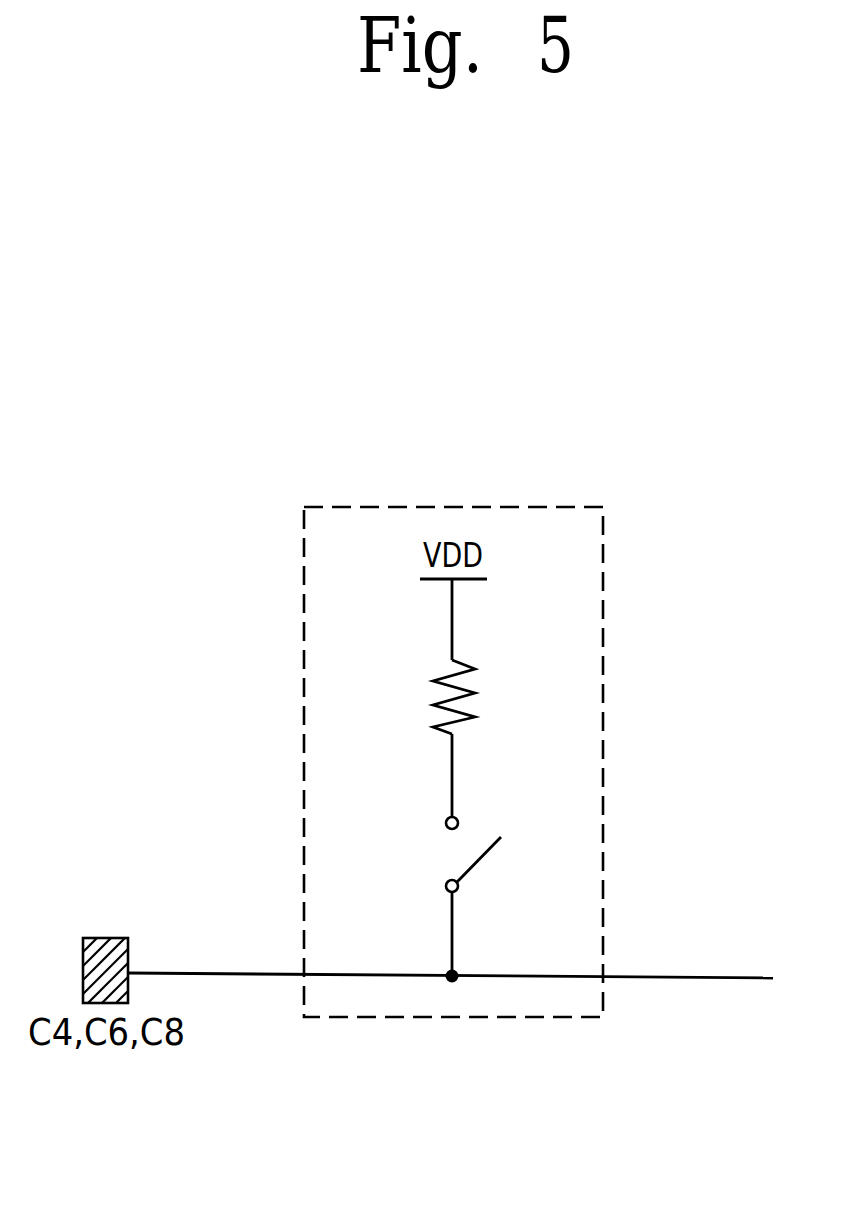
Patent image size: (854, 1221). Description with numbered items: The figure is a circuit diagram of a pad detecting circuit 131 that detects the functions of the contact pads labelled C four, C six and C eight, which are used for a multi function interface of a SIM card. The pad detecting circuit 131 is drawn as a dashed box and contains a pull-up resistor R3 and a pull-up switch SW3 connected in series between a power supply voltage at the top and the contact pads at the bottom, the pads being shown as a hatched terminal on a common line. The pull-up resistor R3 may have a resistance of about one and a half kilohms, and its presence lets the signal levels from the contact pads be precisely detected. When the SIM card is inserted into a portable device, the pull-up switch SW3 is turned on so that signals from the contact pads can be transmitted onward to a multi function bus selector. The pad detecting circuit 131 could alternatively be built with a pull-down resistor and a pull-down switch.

The pad detecting circuit 131 is at (530, 507).
The pull-up resistor R3 is at (427, 697).
The pull-up switch SW3 is at (443, 854).